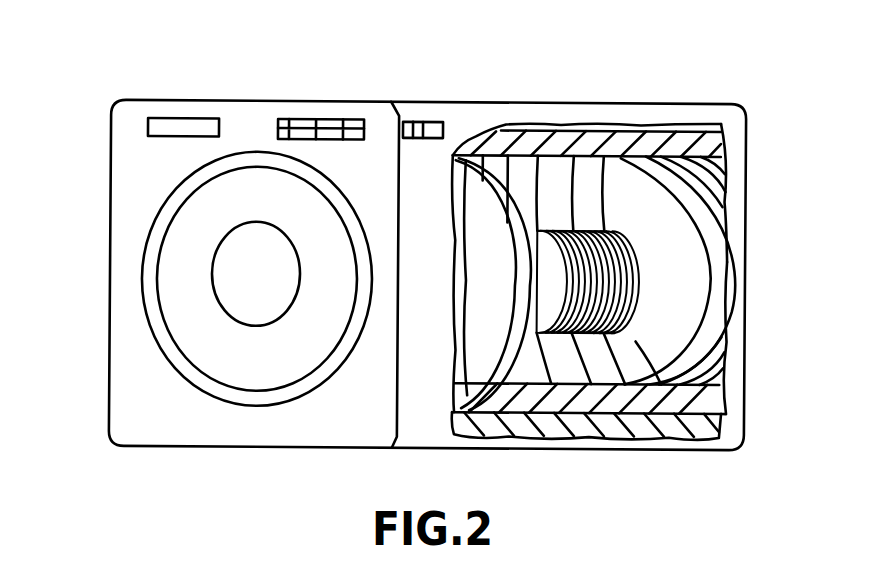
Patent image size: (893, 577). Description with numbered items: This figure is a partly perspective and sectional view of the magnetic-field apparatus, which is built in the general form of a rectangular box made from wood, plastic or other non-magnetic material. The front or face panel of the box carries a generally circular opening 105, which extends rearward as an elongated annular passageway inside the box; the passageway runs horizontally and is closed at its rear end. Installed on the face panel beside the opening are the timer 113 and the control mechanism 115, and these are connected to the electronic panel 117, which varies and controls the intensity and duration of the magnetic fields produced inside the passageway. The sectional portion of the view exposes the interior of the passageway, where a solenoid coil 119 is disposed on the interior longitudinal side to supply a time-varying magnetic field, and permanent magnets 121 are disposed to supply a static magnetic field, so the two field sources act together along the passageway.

The circular opening 105 is at (220, 287).
The timer 113 is at (178, 118).
The control mechanism 115 is at (318, 118).
The electronic panel 117 is at (423, 123).
The solenoid coil 119 is at (650, 298).
The permanent magnets 121 is at (683, 248).